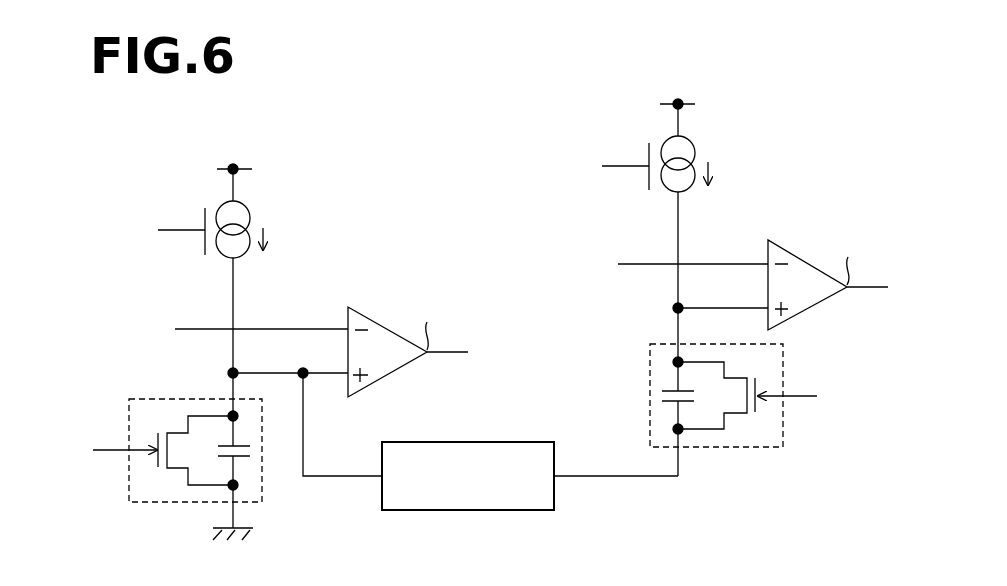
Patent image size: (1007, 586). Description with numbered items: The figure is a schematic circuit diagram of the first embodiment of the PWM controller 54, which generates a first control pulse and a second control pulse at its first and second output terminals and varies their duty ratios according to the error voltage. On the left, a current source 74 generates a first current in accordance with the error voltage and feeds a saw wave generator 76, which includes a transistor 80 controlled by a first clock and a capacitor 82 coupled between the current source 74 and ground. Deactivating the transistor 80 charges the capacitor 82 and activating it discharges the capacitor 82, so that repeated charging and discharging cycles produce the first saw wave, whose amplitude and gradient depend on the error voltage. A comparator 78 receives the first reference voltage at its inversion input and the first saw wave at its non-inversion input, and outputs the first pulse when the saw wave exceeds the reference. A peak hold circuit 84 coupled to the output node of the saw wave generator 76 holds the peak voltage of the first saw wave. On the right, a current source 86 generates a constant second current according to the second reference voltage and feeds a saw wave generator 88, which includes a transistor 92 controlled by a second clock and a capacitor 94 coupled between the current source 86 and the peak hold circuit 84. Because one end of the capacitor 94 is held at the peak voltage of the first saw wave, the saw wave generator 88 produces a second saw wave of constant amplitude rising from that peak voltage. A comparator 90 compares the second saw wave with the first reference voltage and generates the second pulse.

The PWM controller 54 is at (460, 187).
The current source 74 is at (250, 206).
The saw wave generator 76 is at (125, 488).
The comparator 78 is at (382, 318).
The transistor 80 is at (173, 432).
The capacitor 82 is at (245, 457).
The peak hold circuit 84 is at (487, 442).
The current source 86 is at (695, 140).
The saw wave generator 88 is at (785, 435).
The comparator 90 is at (803, 253).
The transistor 92 is at (737, 413).
The capacitor 94 is at (670, 390).